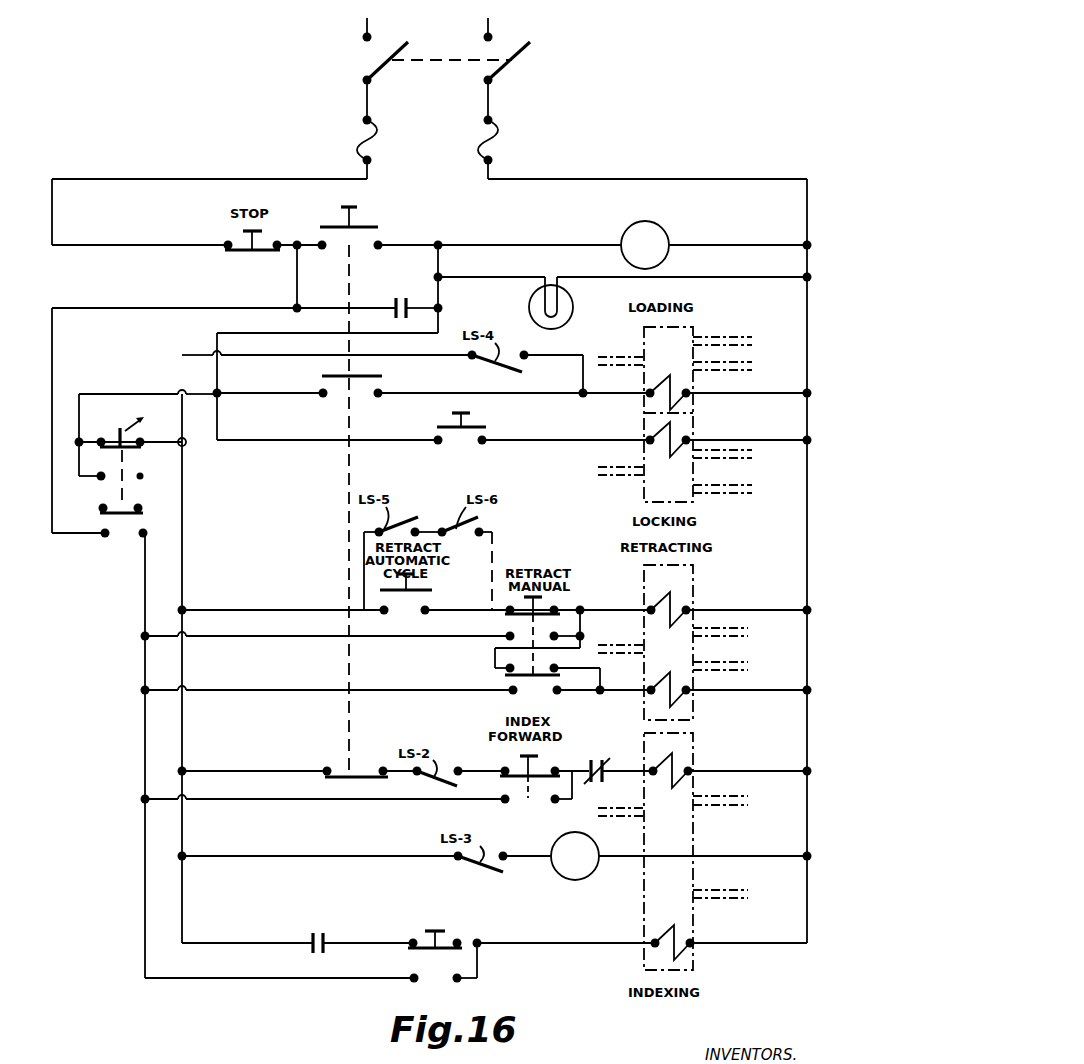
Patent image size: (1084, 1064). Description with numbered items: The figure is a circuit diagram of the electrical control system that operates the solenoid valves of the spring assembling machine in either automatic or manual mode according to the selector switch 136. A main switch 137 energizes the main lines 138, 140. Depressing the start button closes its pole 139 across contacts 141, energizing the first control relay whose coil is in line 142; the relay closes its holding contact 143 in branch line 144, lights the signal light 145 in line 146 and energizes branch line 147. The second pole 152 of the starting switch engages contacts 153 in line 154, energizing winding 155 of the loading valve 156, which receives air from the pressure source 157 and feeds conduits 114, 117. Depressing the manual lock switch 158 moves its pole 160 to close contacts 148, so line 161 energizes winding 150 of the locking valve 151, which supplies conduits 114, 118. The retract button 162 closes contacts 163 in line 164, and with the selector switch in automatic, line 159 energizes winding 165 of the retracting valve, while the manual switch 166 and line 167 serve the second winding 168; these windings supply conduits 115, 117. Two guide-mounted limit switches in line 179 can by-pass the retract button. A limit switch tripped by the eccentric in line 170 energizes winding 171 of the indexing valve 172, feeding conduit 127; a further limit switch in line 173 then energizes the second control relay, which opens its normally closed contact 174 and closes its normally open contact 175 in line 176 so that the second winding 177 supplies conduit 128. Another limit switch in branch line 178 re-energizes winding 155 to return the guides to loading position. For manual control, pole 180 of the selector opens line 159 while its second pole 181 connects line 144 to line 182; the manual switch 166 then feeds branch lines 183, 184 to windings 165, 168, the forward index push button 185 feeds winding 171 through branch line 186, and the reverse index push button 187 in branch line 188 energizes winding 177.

The conduit 114 is at (742, 340).
The conduit 115 is at (742, 632).
The conduit 117 is at (742, 372).
The conduit 118 is at (748, 486).
The conduit 127 is at (744, 800).
The conduit 128 is at (744, 888).
The selector switch 136 is at (121, 428).
The main switch 137 is at (522, 58).
The main line 138 is at (367, 103).
The pole 139 is at (378, 222).
The main line 140 is at (491, 102).
The contacts 141 is at (391, 234).
The line 142 is at (550, 242).
The holding contact 143 is at (396, 312).
The branch line 144 is at (214, 308).
The signal light 145 is at (574, 298).
The line 146 is at (508, 276).
The branch line 147 is at (268, 326).
The contacts 148 is at (482, 442).
The winding 150 is at (690, 438).
The locking valve 151 is at (642, 490).
The second pole 152 is at (377, 374).
The contacts 153 is at (324, 396).
The line 154 is at (270, 396).
The winding 155 is at (642, 384).
The loading valve 156 is at (696, 326).
The source of air pressure 157 is at (614, 342).
The manual lock switch 158 is at (468, 427).
The line 159 is at (182, 523).
The pole 160 is at (436, 434).
The line 161 is at (576, 420).
The retract button 162 is at (390, 604).
The contacts 163 is at (432, 608).
The line 164 is at (228, 610).
The winding 165 is at (686, 608).
The manual switch 166 is at (556, 608).
The line 167 is at (598, 678).
The second winding 168 is at (688, 696).
The line 170 is at (274, 770).
The winding 171 is at (690, 766).
The indexing valve 172 is at (644, 908).
The line 173 is at (376, 856).
The normally closed contact 174 is at (610, 758).
The normally open contact 175 is at (318, 952).
The line 176 is at (242, 942).
The second winding 177 is at (652, 950).
The branch line 178 is at (284, 358).
The line 179 is at (492, 548).
The pole 180 is at (143, 450).
The second pole 181 is at (120, 518).
The line 182 is at (145, 740).
The branch line 183 is at (304, 640).
The branch line 184 is at (320, 690).
The manual forward index push button switch 185 is at (534, 784).
The branch line 186 is at (286, 800).
The reverse index push button 187 is at (418, 950).
The branch line 188 is at (264, 982).